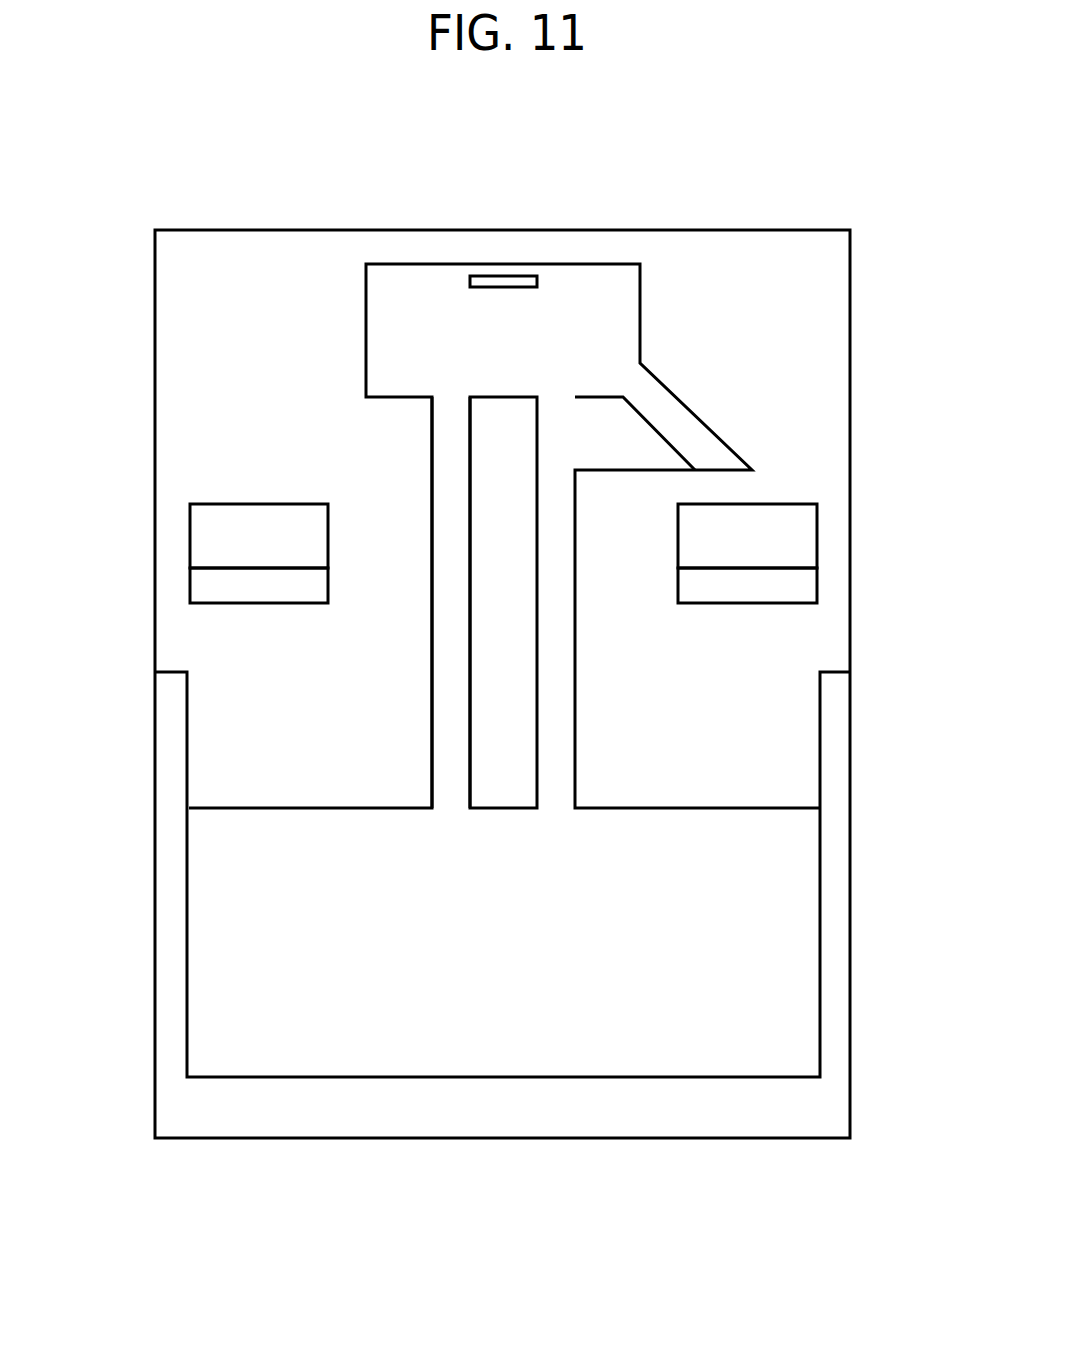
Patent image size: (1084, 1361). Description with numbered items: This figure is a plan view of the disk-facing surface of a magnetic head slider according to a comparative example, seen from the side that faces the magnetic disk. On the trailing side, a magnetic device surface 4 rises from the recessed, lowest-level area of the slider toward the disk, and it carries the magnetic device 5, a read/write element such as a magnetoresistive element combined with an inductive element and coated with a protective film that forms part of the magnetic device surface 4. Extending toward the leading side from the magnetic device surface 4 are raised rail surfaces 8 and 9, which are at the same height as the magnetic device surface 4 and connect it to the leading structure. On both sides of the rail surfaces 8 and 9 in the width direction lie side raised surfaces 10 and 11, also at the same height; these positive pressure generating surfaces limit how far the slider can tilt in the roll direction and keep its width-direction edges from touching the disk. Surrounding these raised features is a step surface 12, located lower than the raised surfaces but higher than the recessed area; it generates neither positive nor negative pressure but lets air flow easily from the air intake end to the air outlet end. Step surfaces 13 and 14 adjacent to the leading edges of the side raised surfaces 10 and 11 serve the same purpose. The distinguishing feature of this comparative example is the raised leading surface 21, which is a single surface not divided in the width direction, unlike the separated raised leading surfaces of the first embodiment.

The magnetic device surface 4 is at (592, 312).
The magnetic device 5 is at (518, 282).
The rail surface 8 is at (452, 652).
The rail surface 9 is at (550, 680).
The side raised surface 10 is at (215, 533).
The side raised surface 11 is at (793, 540).
The step surface 12 is at (505, 752).
The step surface 13 is at (215, 590).
The step surface 14 is at (800, 595).
The raised leading surface 21 is at (494, 1023).